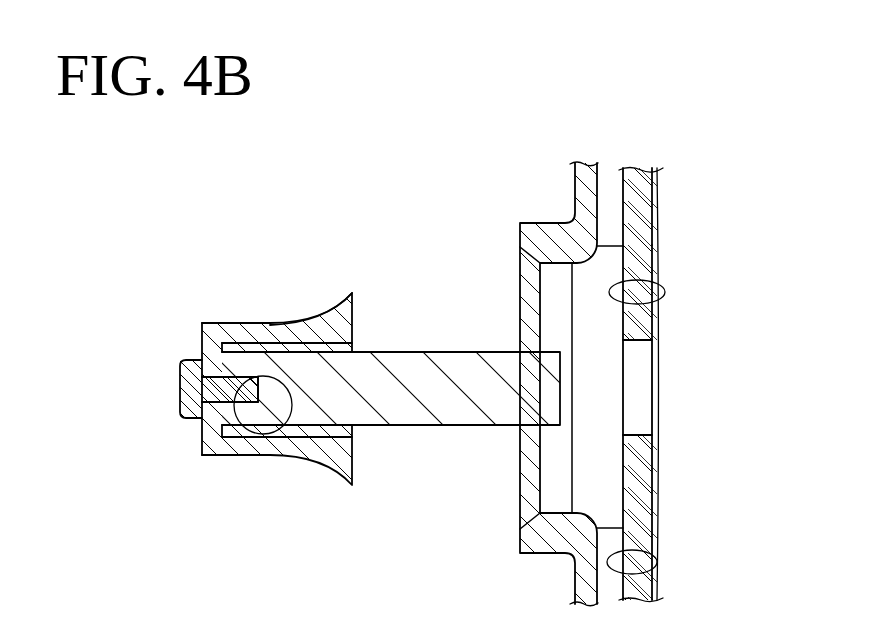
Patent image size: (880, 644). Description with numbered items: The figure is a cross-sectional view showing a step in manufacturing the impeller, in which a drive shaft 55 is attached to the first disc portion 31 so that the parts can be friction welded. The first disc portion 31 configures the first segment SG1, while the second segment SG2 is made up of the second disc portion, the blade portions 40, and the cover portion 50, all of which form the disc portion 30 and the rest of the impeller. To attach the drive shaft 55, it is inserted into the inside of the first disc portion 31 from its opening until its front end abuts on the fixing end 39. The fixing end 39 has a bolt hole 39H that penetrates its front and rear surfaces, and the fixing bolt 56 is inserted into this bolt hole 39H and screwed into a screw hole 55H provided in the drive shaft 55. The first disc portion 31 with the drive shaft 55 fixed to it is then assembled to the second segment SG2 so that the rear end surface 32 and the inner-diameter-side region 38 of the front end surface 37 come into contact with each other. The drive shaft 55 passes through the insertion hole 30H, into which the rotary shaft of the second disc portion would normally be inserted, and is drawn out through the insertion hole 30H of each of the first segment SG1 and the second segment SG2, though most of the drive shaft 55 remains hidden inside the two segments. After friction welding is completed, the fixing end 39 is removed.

The disc portion 30 is at (655, 218).
The insertion hole 30H is at (648, 345).
The first disc portion 31 is at (263, 322).
The rear end surface 32 is at (355, 315).
The front end surface 37 is at (655, 555).
The inner-diameter-side region 38 is at (665, 290).
The fixing end 39 is at (200, 352).
The bolt hole 39H is at (218, 457).
The blade portions 40 is at (610, 165).
The cover portion 50 is at (575, 193).
The drive shaft 55 is at (407, 426).
The screw hole 55H is at (282, 433).
The bolt 56 is at (180, 403).
The first segment SG1 is at (298, 308).
The second segment SG2 is at (672, 172).